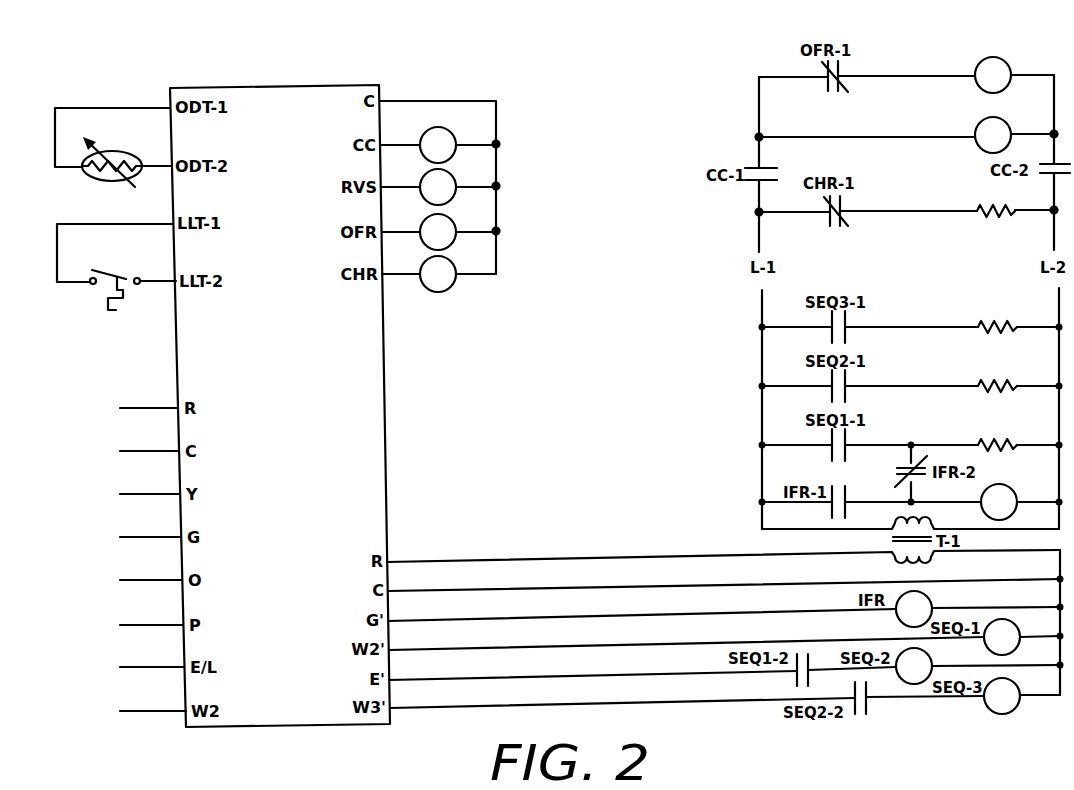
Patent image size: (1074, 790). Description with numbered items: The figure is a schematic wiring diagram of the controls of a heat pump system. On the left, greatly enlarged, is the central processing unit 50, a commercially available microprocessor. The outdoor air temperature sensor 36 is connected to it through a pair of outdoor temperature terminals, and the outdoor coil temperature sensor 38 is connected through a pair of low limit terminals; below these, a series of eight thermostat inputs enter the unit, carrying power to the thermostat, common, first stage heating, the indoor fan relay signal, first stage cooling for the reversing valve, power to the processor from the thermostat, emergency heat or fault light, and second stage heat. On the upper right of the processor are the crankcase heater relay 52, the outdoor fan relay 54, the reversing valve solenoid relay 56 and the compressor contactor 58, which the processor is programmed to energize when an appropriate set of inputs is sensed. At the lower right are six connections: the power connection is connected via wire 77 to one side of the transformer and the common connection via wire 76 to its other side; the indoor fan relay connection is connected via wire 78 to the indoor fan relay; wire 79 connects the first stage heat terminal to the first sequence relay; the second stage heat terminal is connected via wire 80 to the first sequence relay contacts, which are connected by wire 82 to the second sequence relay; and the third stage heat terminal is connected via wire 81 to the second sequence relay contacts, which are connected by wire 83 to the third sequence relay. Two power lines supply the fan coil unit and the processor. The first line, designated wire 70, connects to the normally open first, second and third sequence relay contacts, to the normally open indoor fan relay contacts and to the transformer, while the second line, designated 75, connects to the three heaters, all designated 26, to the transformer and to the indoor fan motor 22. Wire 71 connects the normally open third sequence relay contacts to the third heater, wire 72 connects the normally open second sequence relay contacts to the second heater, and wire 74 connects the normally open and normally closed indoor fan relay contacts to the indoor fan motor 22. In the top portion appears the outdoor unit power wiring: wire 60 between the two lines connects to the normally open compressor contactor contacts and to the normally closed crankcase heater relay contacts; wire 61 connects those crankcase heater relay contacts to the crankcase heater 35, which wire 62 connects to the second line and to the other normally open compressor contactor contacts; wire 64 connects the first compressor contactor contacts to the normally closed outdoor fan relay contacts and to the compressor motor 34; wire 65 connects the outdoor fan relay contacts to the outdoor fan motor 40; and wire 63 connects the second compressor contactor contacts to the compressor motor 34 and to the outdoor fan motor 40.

The indoor fan motor 22 is at (1010, 487).
The heaters H1, H2 and H3 26 is at (990, 322).
The compressor motor 34 is at (985, 148).
The crankcase heater 35 is at (992, 215).
The outdoor air temperature sensor 36 is at (92, 182).
The outdoor coil temperature sensor 38 is at (105, 287).
The outdoor fan motor 40 is at (983, 88).
The central processing unit 50 is at (387, 425).
The crankcase heater relay 52 is at (455, 286).
The outdoor fan relay 54 is at (453, 244).
The reversing valve solenoid relay 56 is at (453, 199).
The compressor contactor 58 is at (452, 158).
The wire 60 is at (790, 214).
The wire 61 is at (940, 213).
The wire 62 is at (1040, 213).
The wire 63 is at (1052, 110).
The wire 64 is at (757, 105).
The wire 65 is at (882, 74).
The wire 70 is at (758, 302).
The wire 71 is at (882, 326).
The wire 72 is at (882, 385).
The wire 74 is at (895, 498).
The wire 75 is at (1057, 312).
The wire 76 is at (1058, 564).
The wire 77 is at (542, 558).
The wire 78 is at (603, 615).
The wire 79 is at (632, 645).
The wire 80 is at (652, 671).
The wire 81 is at (675, 701).
The wire 82 is at (872, 672).
The wire 83 is at (937, 699).